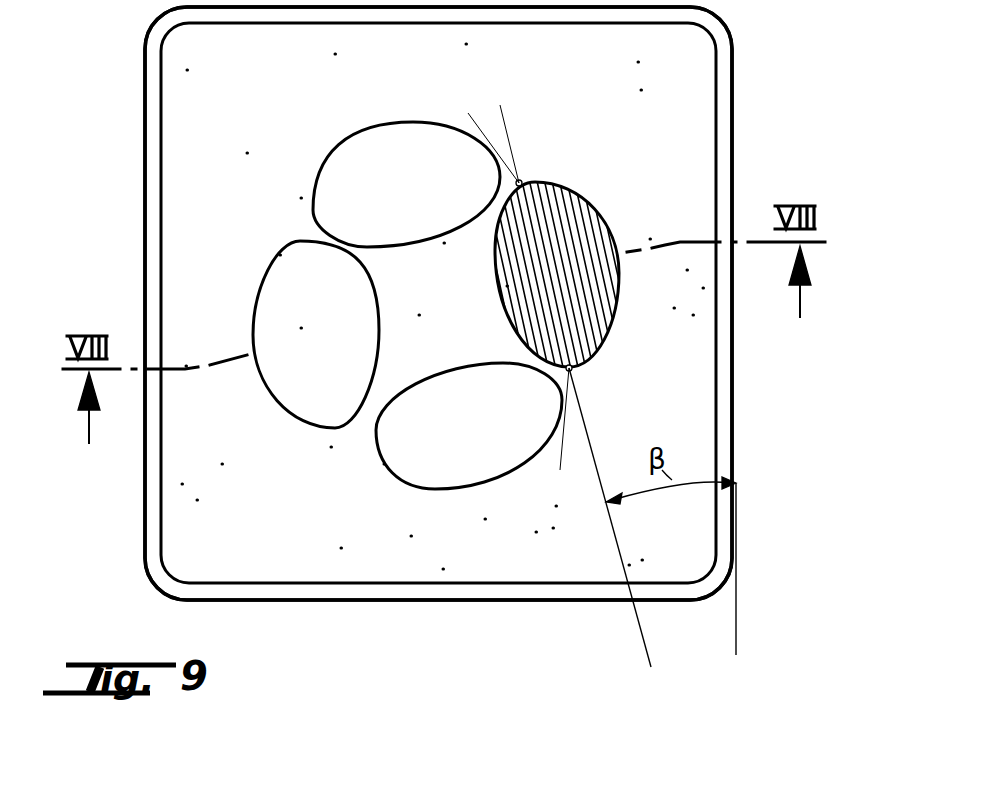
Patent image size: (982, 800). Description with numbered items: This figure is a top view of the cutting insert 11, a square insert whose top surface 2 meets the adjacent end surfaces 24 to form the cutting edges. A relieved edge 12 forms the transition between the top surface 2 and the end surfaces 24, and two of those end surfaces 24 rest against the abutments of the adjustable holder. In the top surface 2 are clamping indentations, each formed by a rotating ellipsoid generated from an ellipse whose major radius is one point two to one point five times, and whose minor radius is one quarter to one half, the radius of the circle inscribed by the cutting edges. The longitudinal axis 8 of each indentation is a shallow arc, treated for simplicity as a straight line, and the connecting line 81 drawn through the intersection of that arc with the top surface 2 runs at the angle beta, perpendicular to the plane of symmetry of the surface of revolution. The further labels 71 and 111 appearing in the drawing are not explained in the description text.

The cutting insert 11 is at (413, 179).
The top surface 2 is at (327, 546).
The insert edge (7') 71 is at (375, 150).
The longitudinal axis 8 is at (560, 456).
The connecting line 81 is at (612, 537).
The holder (11') 111 is at (147, 503).
The relieved edge 12 is at (148, 210).
The end surfaces 24 is at (731, 152).